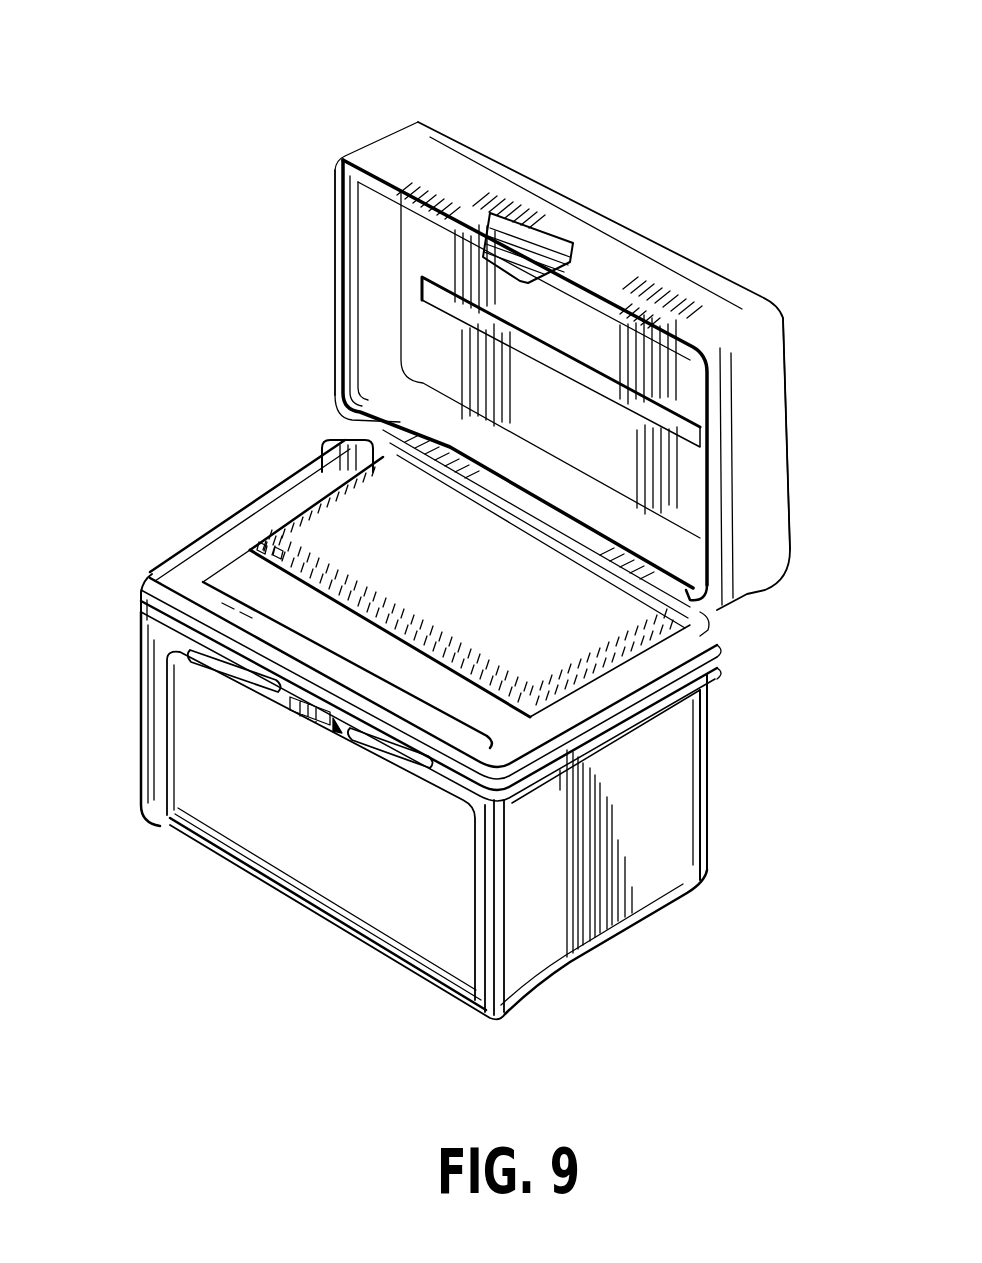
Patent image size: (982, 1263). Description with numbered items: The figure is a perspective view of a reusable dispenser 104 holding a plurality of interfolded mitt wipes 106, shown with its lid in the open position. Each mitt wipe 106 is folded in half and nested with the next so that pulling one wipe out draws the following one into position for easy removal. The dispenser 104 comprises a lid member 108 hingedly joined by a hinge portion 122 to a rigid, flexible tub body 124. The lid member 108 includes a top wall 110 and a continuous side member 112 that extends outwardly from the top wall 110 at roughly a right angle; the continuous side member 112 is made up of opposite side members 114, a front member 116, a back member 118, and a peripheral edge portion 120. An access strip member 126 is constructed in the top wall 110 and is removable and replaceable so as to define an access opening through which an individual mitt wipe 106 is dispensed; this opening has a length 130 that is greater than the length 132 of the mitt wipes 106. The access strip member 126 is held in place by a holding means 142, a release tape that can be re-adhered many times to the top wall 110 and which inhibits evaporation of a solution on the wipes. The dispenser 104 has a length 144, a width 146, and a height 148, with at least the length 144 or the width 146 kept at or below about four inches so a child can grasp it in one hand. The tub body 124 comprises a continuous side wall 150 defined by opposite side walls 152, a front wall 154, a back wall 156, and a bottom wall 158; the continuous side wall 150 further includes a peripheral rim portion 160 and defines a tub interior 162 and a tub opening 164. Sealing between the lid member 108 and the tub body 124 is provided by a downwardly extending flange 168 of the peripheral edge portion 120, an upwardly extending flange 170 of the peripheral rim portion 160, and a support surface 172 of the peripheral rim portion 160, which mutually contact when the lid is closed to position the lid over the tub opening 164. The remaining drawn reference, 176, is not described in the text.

The dispenser 104 is at (258, 352).
The interfolded mitt wipes 106 is at (600, 703).
The lid member 108 is at (808, 422).
The top wall 110 is at (790, 473).
The continuous side member 112 is at (380, 298).
The opposite side members 114 is at (380, 205).
The front member 116 is at (632, 267).
The back member 118 is at (690, 560).
The peripheral edge portion 120 is at (337, 240).
The hinge portion 122 is at (567, 537).
The tub body 124 is at (126, 720).
The access strip member 126 is at (597, 383).
The length of access opening 130 is at (747, 476).
The length of mitt wipes 132 is at (598, 655).
The holding means 142 is at (564, 900).
The length of dispenser 144 is at (393, 1090).
The width of dispenser 146 is at (837, 960).
The height of dispenser 148 is at (717, 643).
The continuous side wall 150 is at (147, 767).
The opposite side walls 152 is at (187, 543).
The front wall 154 is at (284, 820).
The back wall 156 is at (677, 743).
The bottom wall 158 is at (373, 903).
The peripheral rim portion 160 is at (143, 570).
The tub interior 162 is at (332, 425).
The tub opening 164 is at (263, 513).
The downwardly extending flange 168 is at (593, 277).
The upwardly extending flange 170 is at (420, 750).
The support surface 172 is at (260, 670).
The latch tab 176 is at (507, 233).